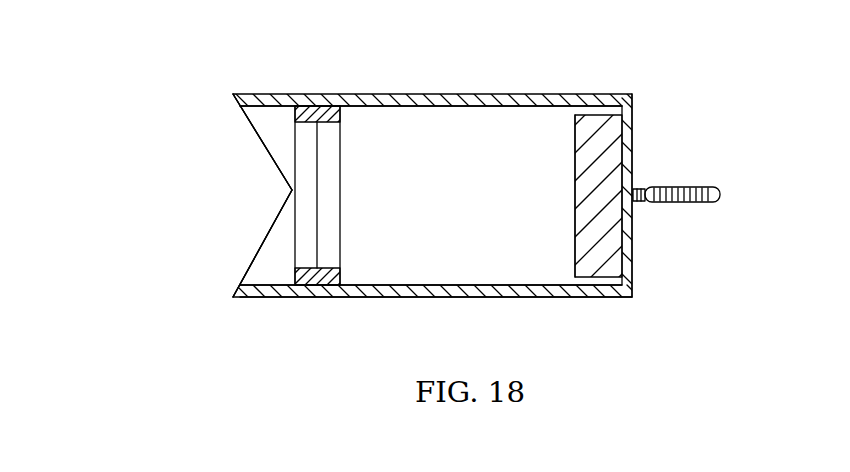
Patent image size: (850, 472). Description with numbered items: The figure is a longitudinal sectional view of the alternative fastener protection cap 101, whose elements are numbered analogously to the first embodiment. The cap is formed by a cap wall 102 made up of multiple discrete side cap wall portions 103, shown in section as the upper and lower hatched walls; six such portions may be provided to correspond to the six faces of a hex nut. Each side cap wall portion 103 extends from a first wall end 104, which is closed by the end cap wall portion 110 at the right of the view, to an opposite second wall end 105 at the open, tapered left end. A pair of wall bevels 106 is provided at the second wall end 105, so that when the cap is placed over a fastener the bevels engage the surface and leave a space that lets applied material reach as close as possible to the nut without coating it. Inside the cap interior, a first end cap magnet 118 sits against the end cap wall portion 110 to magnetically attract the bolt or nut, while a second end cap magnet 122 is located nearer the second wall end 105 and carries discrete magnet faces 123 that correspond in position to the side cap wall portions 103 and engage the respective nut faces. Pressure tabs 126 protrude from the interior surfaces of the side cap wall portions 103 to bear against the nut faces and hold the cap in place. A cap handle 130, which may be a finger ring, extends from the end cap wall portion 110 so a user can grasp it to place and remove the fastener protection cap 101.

The fastener protection cap 101 is at (144, 87).
The cap wall 102 is at (286, 300).
The side cap wall portion 103 is at (528, 128).
The first wall end 104 is at (633, 96).
The second wall end 105 is at (292, 190).
The wall bevel 106 is at (233, 94).
The end cap wall portion 110 is at (633, 128).
The first end cap magnet 118 is at (575, 226).
The second end cap magnet 122 is at (352, 153).
The magnet face 123 is at (317, 124).
The pressure tab 126 is at (352, 108).
The cap handle 130 is at (720, 193).